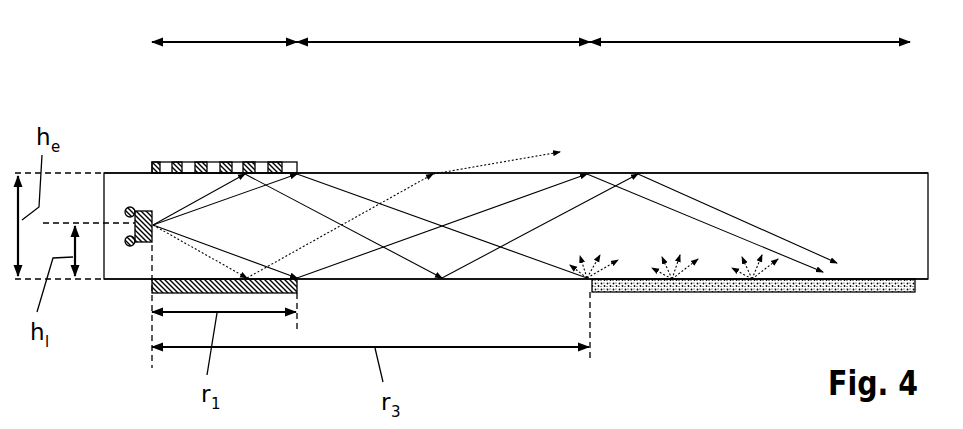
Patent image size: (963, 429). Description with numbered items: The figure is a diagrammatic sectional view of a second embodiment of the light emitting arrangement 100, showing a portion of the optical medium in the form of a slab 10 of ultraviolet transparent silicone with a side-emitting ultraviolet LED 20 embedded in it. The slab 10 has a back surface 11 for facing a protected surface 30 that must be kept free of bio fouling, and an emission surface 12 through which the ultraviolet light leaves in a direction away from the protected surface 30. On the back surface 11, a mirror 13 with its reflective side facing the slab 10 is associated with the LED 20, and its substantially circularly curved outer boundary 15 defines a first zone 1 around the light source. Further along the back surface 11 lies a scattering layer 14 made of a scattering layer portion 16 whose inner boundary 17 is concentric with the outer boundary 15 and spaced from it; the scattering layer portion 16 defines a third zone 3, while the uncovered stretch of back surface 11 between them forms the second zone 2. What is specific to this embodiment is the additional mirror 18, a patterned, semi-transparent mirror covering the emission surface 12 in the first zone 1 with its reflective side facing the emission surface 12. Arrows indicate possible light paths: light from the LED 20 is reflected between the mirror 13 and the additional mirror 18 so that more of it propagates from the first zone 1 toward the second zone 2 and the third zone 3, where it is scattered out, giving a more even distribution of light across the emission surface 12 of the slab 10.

The first zone 1 is at (224, 25).
The second zone 2 is at (443, 25).
The third zone 3 is at (750, 25).
The slab 10 is at (845, 215).
The back surface 11 is at (420, 280).
The emission surface 12 is at (677, 172).
The mirror 13 is at (124, 308).
The scattering layer 14 is at (753, 325).
The outer boundary 15 is at (255, 347).
The scattering layer portion 16 is at (703, 280).
The inner boundary 17 is at (584, 281).
The additional mirror 18 is at (200, 162).
The LED 20 is at (137, 212).
The protected surface 30 is at (642, 361).
The light emitting arrangement 100 is at (786, 146).